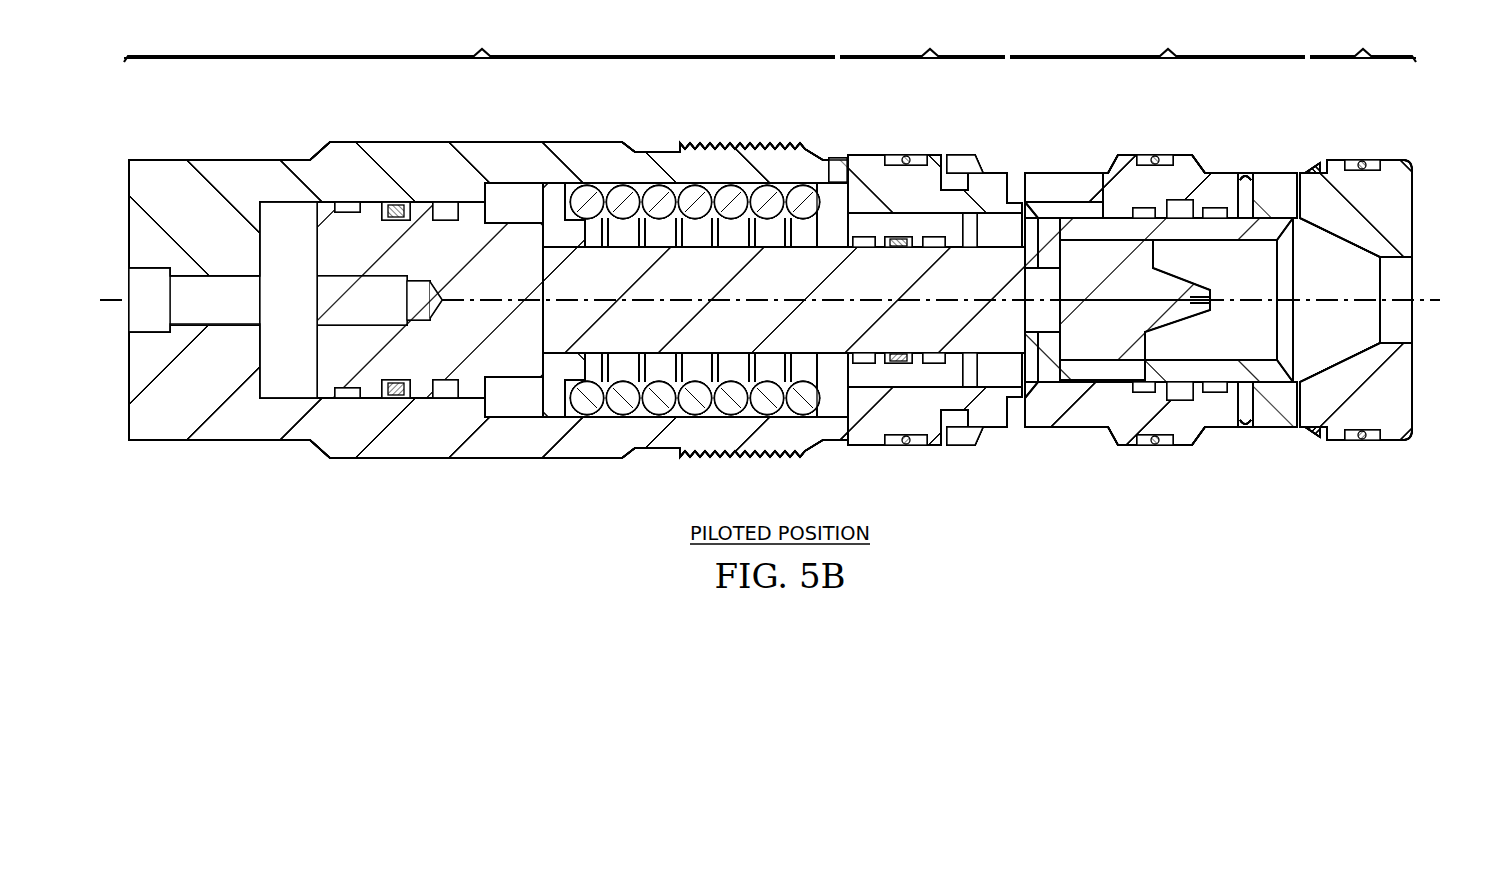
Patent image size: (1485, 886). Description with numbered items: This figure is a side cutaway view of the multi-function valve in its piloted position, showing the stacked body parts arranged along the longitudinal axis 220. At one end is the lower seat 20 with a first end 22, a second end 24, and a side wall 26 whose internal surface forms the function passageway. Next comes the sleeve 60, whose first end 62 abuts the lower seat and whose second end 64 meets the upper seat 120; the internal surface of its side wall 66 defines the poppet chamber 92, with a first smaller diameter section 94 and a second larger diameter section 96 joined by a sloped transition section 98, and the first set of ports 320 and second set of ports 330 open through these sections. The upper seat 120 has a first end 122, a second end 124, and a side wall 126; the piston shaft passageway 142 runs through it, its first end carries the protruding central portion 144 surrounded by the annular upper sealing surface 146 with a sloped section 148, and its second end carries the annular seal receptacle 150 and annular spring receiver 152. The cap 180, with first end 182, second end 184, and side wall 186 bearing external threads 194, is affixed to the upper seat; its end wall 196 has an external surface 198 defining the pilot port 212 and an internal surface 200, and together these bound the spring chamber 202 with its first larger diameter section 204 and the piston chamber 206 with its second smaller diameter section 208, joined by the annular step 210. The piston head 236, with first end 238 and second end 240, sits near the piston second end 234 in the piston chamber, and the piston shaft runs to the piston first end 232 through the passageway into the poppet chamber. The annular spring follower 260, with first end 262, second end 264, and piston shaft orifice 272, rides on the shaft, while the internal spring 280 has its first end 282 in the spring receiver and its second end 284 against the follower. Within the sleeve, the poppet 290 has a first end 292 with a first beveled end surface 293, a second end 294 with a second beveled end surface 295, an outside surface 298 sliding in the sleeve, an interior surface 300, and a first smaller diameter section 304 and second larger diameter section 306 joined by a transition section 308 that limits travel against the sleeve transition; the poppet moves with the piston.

The lower seat 20 is at (1356, 230).
The first end 22 is at (1418, 192).
The second end 24 is at (1290, 205).
The side wall 26 is at (1393, 159).
The sleeve 60 is at (1139, 233).
The first end 62 is at (1312, 235).
The second end 64 is at (1017, 198).
The side wall 66 is at (1083, 203).
The poppet chamber 92 is at (1045, 343).
The first smaller diameter section 94 is at (1205, 212).
The second larger diameter section 96 is at (1050, 197).
The sloped transition section 98 is at (1115, 195).
The upper seat 120 is at (935, 233).
The first end 122 is at (1005, 200).
The second end 124 is at (855, 175).
The side wall 126 is at (925, 160).
The piston shaft passageway 142 is at (883, 247).
The protruding central portion 144 is at (973, 232).
The annular upper sealing surface 146 is at (965, 196).
The sloped section 148 is at (925, 247).
The annular seal receptacle 150 is at (820, 250).
The annular spring receiver 152 is at (834, 160).
The cap 180 is at (488, 239).
The first end 182 is at (810, 172).
The second end 184 is at (135, 162).
The side wall 186 is at (420, 141).
The external threads 194 is at (714, 142).
The end wall 196 is at (223, 170).
The external surface 198 is at (127, 205).
The internal surface 200 is at (266, 212).
The spring chamber 202 is at (643, 188).
The first larger diameter section 204 is at (532, 184).
The piston chamber 206 is at (297, 385).
The second smaller diameter section 208 is at (297, 206).
The annular step 210 is at (492, 185).
The pilot port 212 is at (152, 276).
The longitudinal axis 220 is at (1414, 300).
The first end 232 is at (1214, 305).
The second end 234 is at (317, 368).
The piston head 236 is at (418, 358).
The first end 238 is at (430, 400).
The second end 240 is at (317, 335).
The annular spring follower 260 is at (556, 408).
The first end 262 is at (602, 362).
The second end 264 is at (500, 410).
The piston shaft orifice 272 is at (545, 352).
The internal spring 280 is at (693, 408).
The first end 282 is at (800, 458).
The second end 284 is at (582, 407).
The poppet 290 is at (1250, 352).
The first end 292 is at (1293, 398).
The first beveled end surface 293 is at (1296, 360).
The second end 294 is at (1064, 392).
The second beveled end surface 295 is at (975, 372).
The outside surface 298 is at (1146, 385).
The interior surface 300 is at (1230, 241).
The first smaller diameter section 304 is at (1168, 410).
The second larger diameter section 306 is at (1088, 415).
The transition section 308 is at (1085, 380).
The first set of ports 320 is at (1017, 428).
The second set of ports 330 is at (1246, 430).